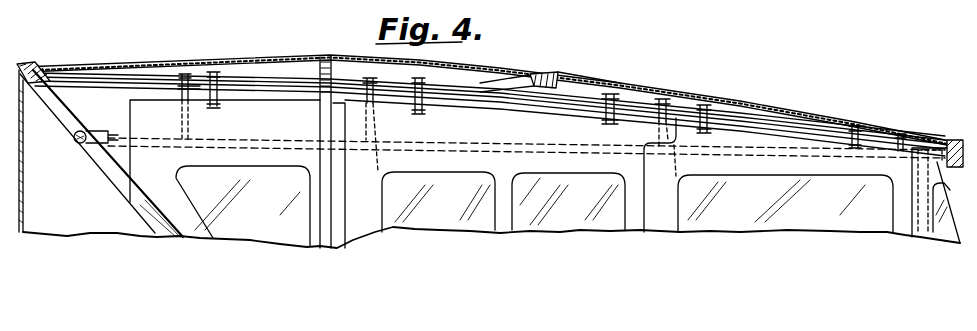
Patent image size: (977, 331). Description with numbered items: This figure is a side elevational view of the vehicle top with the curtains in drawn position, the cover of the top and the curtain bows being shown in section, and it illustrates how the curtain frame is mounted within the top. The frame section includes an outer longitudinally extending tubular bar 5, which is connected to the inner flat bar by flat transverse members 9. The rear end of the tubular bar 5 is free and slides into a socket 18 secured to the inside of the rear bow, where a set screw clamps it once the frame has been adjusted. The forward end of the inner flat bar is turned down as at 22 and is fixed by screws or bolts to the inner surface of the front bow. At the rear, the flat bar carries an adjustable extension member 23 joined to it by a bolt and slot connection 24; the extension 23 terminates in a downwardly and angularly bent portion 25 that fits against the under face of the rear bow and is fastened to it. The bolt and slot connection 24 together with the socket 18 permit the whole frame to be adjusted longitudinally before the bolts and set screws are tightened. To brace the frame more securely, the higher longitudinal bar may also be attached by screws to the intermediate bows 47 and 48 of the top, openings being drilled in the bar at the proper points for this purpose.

The bolt and slot connection 24 is at (78, 66).
The adjustable extension member 23 is at (47, 76).
The downwardly and angularly bent portion 25 is at (43, 68).
The intermediate bow 48 is at (327, 57).
The transverse member 9 is at (180, 90).
The outer longitudinally extending tubular bar 5 is at (244, 137).
The socket 18 is at (107, 131).
The intermediate bow 47 is at (557, 72).
The turned-down forward end 22 is at (957, 140).